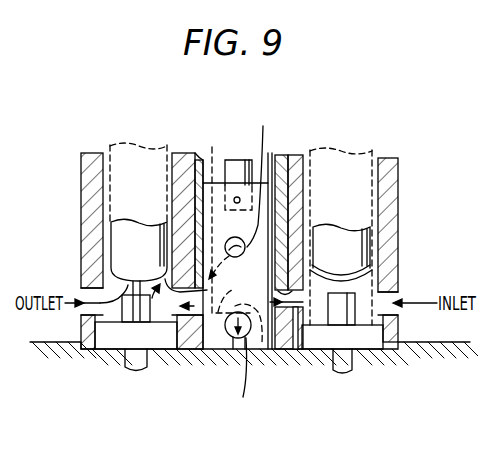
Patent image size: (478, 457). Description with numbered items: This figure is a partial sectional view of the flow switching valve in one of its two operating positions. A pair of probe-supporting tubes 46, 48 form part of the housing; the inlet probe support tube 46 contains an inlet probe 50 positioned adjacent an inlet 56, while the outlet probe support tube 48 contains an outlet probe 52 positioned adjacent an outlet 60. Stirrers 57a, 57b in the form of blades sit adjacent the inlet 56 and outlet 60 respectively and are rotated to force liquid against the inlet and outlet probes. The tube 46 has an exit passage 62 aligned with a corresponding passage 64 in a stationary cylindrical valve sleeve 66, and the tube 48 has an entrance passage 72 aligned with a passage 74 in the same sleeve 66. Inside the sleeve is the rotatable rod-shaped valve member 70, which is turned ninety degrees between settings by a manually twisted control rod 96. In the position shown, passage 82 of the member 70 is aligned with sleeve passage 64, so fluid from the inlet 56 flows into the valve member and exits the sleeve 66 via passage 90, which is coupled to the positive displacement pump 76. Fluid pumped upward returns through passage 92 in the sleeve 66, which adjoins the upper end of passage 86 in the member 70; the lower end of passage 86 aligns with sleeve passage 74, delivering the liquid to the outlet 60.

The outlet probe support tube 48 is at (88, 190).
The outlet probe 52 is at (114, 232).
The passage 74 is at (163, 277).
The entrance passage 72 is at (143, 350).
The stirrer 57b is at (133, 330).
The outlet 60 is at (82, 292).
The passage 86 is at (209, 156).
The control rod 96 is at (248, 159).
The rod-shaped member 70 is at (271, 155).
The positive displacement pump 76 is at (246, 259).
The passage 92 is at (233, 297).
The passage 90 is at (232, 337).
The cylindrical valve sleeve 66 is at (282, 196).
The passage 82 is at (265, 350).
The passage 64 is at (305, 268).
The inlet probe 50 is at (365, 247).
The exit passage 62 is at (294, 330).
The stirrer 57a is at (368, 314).
The inlet probe support tube 46 is at (390, 209).
The inlet 56 is at (398, 294).